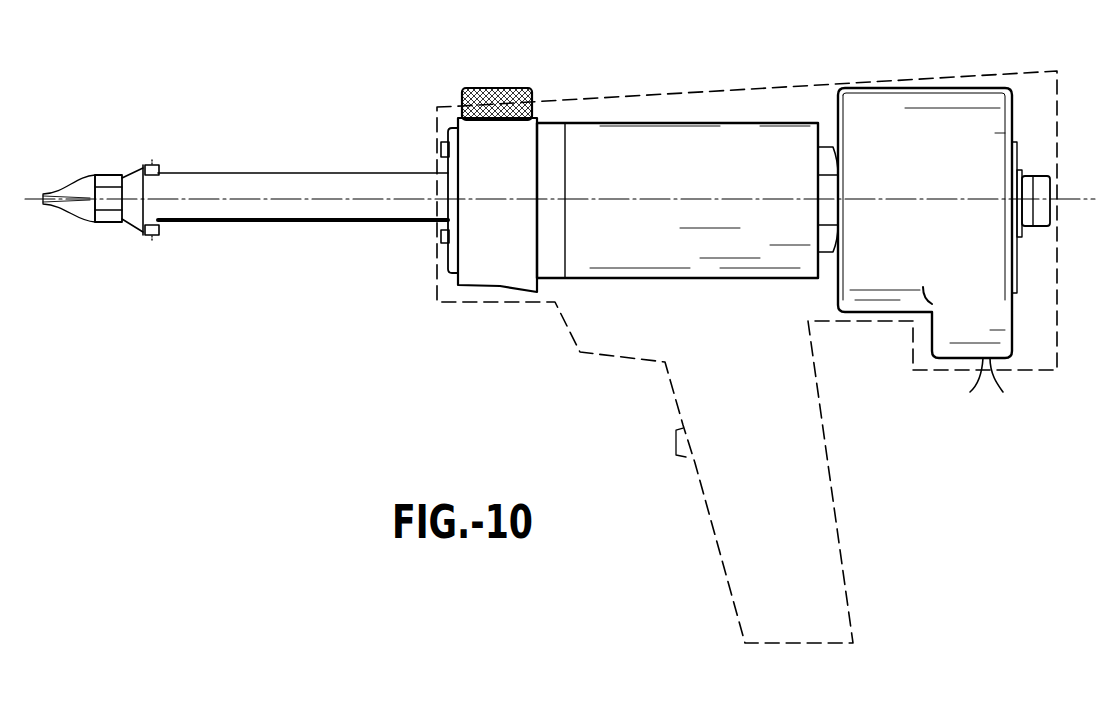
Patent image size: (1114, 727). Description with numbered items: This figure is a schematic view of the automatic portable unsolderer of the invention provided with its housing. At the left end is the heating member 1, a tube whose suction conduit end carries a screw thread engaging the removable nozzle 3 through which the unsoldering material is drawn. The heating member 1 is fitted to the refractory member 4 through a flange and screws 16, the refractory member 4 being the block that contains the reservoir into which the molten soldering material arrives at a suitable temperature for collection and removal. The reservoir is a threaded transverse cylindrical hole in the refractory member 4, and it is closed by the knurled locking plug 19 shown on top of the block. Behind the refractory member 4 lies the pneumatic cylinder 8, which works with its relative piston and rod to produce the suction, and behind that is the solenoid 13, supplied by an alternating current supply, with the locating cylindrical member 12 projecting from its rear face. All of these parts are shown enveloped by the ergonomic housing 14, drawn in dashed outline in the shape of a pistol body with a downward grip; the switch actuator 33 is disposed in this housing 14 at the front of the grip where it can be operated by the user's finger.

The heating member 1 is at (245, 172).
The nozzle 3 is at (73, 185).
The refractory member 4 is at (475, 285).
The pneumatic cylinder 8 is at (637, 123).
The locating cylindrical member 12 is at (1035, 185).
The solenoid 13 is at (872, 108).
The ergonomic housing 14 is at (747, 540).
The screws 16 is at (445, 147).
The locking plug 19 is at (488, 92).
The switch actuator 33 is at (675, 447).